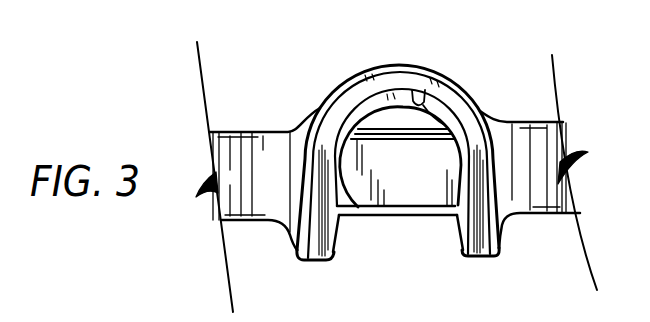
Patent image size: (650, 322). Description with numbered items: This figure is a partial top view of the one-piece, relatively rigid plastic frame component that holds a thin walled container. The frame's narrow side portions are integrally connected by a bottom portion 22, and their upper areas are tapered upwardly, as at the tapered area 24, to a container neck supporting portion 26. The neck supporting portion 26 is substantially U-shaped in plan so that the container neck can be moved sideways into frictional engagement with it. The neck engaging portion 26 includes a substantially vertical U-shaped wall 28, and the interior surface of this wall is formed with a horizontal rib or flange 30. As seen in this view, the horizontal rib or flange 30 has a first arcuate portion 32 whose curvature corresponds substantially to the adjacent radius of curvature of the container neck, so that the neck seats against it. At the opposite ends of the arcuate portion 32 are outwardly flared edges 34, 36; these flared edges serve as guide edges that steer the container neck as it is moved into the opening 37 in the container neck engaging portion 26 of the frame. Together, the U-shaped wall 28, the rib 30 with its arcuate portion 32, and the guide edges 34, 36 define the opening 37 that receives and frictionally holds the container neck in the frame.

The bottom portion 22 is at (417, 194).
The tapered upper area 24 is at (268, 134).
The container neck supporting portion 26 is at (475, 78).
The vertical U-shaped wall 28 is at (421, 96).
The horizontal rib or flange 30 is at (456, 164).
The first arcuate portion 32 is at (447, 127).
The outwardly flared edge 34 is at (338, 246).
The outwardly flared edge 36 is at (461, 257).
The opening 37 is at (378, 226).